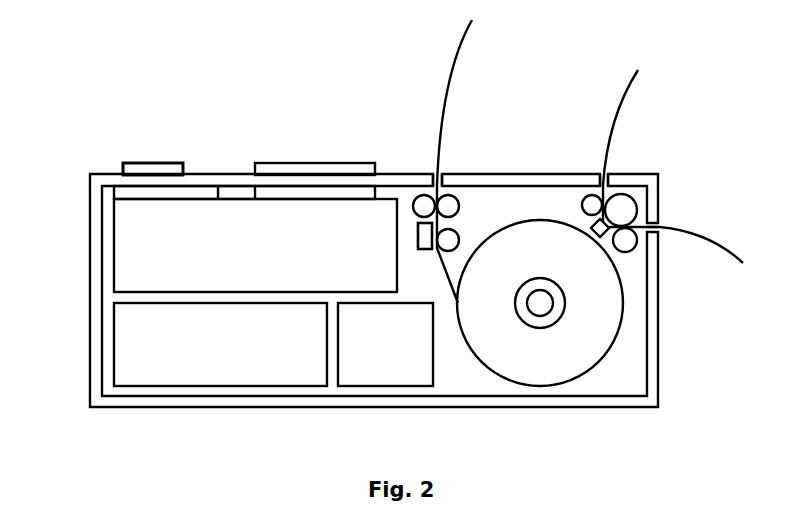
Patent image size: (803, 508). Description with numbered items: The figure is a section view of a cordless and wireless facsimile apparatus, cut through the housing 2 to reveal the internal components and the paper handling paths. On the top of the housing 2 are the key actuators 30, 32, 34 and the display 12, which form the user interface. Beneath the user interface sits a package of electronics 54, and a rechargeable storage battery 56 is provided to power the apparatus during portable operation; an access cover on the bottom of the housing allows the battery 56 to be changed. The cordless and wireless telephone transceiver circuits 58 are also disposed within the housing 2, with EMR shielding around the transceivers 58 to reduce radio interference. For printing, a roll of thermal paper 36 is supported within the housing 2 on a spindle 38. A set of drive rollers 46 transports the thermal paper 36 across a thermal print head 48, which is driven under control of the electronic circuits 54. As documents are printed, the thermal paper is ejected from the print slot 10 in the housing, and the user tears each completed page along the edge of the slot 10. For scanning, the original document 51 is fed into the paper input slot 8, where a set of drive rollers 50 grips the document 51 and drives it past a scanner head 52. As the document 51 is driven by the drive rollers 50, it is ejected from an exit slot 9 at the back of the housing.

The housing 2 is at (536, 408).
The paper input slot 8 is at (610, 174).
The exit slot 9 is at (660, 224).
The print slot 10 is at (442, 174).
The display 12 is at (256, 163).
The key actuator 30 is at (126, 163).
The key actuator 32 is at (153, 169).
The key actuator 34 is at (153, 169).
The roll of thermal paper 36 is at (450, 88).
The spindle 38 is at (516, 302).
The drive rollers 46 is at (459, 234).
The thermal print head 48 is at (418, 238).
The drive rollers 50 is at (639, 214).
The original document 51 is at (617, 110).
The scanner head 52 is at (593, 226).
The package of electronics 54 is at (378, 291).
The rechargeable storage battery 56 is at (327, 365).
The cordless and wireless telephone transceiver circuits 58 is at (433, 368).